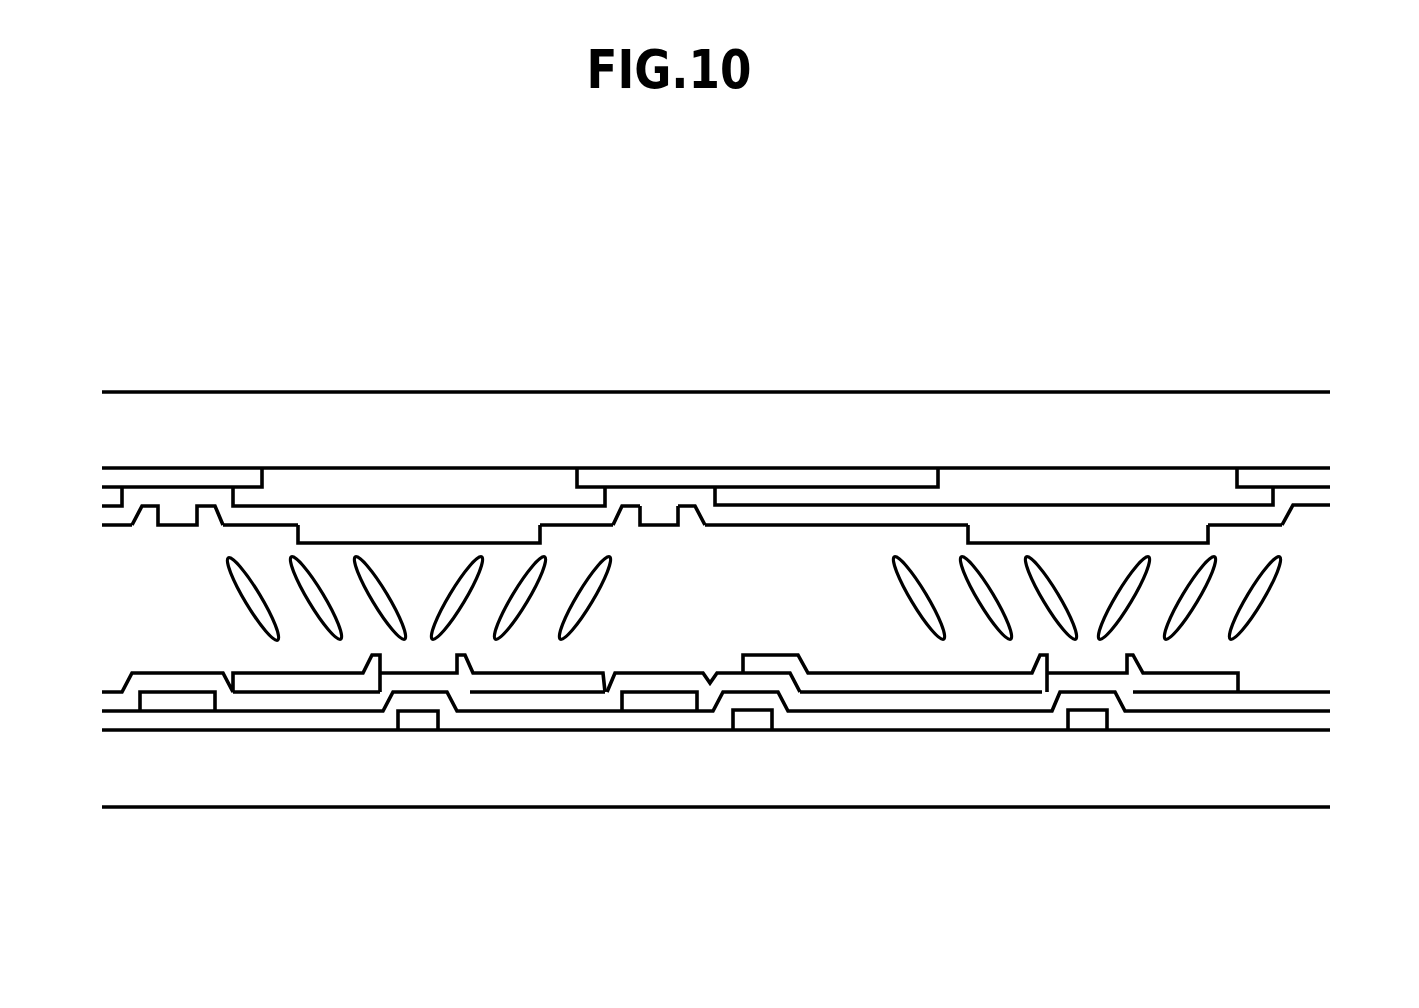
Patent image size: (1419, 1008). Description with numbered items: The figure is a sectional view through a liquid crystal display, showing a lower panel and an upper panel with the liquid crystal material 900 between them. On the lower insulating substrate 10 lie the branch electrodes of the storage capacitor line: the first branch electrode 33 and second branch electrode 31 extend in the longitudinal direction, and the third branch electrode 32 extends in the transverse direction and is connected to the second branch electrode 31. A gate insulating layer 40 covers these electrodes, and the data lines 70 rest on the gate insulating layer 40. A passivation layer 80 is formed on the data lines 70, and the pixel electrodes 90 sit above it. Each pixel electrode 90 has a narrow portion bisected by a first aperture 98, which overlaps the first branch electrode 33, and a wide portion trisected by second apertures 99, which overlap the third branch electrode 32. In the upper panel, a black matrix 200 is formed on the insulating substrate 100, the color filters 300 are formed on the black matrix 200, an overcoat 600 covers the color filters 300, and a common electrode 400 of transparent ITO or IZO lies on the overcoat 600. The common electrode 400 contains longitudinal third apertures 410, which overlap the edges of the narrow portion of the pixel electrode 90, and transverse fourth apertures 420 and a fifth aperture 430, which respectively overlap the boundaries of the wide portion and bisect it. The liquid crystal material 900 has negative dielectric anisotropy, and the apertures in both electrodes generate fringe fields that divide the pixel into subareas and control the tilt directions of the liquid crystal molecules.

The insulating substrate 10 is at (483, 793).
The second branch electrode 31 is at (748, 720).
The third branch electrode 32 is at (1090, 718).
The first branch electrode 33 is at (421, 720).
The gate insulating layer 40 is at (902, 720).
The data line 70 is at (174, 705).
The passivation layer 80 is at (600, 705).
The pixel electrode 90 is at (302, 683).
The first aperture 98 is at (418, 660).
The second aperture 99 is at (1087, 660).
The insulating substrate 100 is at (733, 410).
The black matrix 200 is at (847, 475).
The color filter 300 is at (1013, 477).
The common electrode 400 is at (342, 535).
The third aperture 410 is at (252, 543).
The fourth aperture 420 is at (1276, 535).
The fifth aperture 430 is at (820, 533).
The overcoat 600 is at (470, 520).
The liquid crystal material 900 is at (1300, 636).